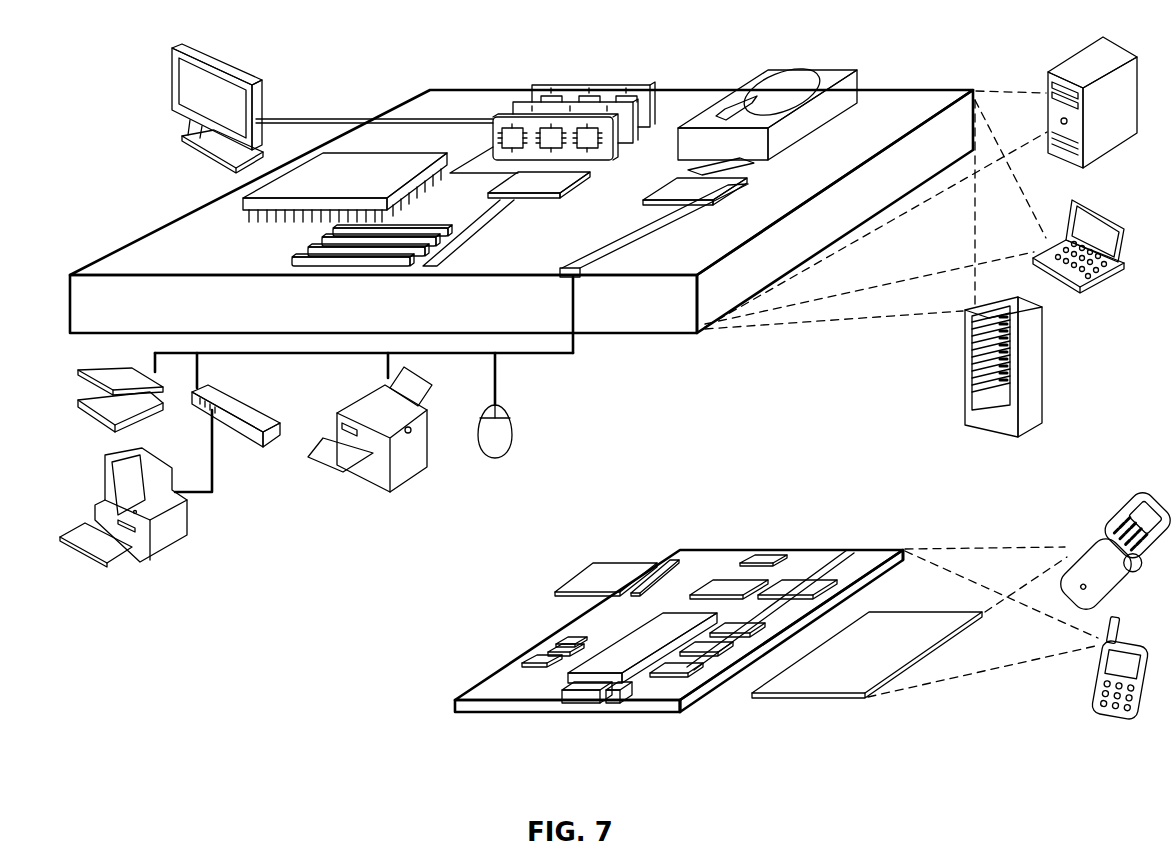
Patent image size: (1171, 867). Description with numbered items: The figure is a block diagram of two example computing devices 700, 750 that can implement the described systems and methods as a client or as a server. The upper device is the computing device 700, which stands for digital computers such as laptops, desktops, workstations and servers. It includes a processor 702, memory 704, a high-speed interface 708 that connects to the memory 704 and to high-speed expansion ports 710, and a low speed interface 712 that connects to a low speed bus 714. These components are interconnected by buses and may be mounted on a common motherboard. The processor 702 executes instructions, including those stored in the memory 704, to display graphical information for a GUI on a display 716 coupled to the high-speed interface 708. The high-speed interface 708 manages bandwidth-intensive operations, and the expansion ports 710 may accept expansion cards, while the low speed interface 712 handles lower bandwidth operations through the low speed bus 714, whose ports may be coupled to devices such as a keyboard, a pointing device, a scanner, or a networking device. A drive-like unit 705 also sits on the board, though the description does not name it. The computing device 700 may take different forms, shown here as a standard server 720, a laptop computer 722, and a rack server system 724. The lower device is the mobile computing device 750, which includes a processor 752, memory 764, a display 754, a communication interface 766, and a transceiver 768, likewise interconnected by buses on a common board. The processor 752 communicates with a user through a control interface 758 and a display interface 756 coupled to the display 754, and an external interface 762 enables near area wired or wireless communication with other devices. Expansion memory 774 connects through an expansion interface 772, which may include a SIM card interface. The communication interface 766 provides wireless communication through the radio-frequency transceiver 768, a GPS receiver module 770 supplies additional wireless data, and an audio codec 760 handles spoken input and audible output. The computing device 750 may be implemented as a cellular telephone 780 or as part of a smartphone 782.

The computing device 700 is at (362, 66).
The processor 702 is at (243, 206).
The memory 704 is at (550, 86).
The optical disk drive 705 is at (758, 70).
The high-speed interface 708 is at (517, 185).
The high-speed expansion ports 710 is at (308, 245).
The low speed interface 712 is at (694, 187).
The low speed bus 714 is at (583, 278).
The display 716 is at (170, 52).
The standard server 720 is at (1047, 76).
The laptop computer 722 is at (1073, 202).
The rack server system 724 is at (965, 390).
The computing device 750 is at (664, 527).
The processor 752 is at (620, 686).
The display 754 is at (862, 697).
The display interface 756 is at (688, 697).
The control interface 758 is at (722, 657).
The audio codec 760 is at (736, 638).
The external interface 762 is at (587, 702).
The memory 764 is at (540, 662).
The communication interface 766 is at (730, 583).
The transceiver 768 is at (797, 583).
The GPS receiver module 770 is at (762, 562).
The expansion interface 772 is at (657, 562).
The expansion memory 774 is at (597, 562).
The cellular telephone 780 is at (1127, 497).
The smartphone 782 is at (1101, 623).